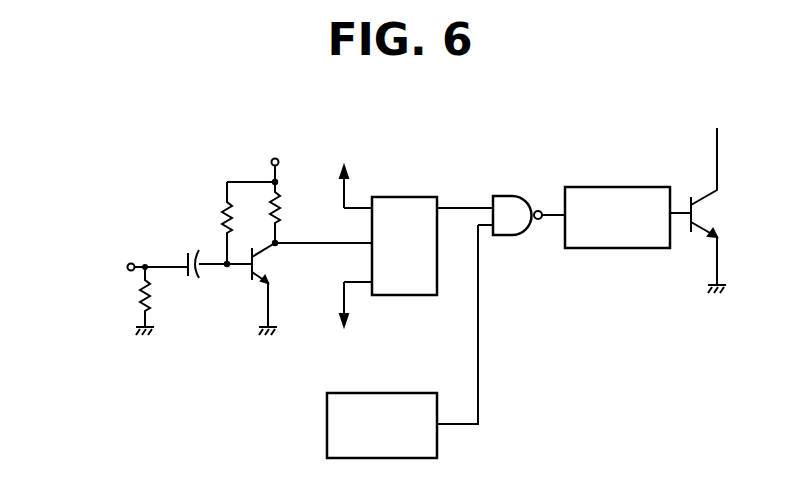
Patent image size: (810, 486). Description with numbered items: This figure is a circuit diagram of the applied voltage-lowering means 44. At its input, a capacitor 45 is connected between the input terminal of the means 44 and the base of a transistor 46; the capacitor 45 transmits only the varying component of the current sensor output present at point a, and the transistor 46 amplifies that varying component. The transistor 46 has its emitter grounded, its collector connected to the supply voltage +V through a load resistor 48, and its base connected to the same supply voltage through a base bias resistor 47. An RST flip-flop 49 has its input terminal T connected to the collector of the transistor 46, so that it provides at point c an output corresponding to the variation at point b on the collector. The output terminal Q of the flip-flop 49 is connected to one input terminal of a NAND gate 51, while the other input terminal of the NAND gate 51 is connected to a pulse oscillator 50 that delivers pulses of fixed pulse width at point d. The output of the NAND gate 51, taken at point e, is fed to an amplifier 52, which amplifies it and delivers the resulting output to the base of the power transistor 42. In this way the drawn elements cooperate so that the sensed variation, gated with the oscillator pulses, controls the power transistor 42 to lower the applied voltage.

The power transistor 42 is at (719, 179).
The applied voltage-lowering means 44 is at (590, 353).
The capacitor 45 is at (193, 279).
The transistor 46 is at (250, 277).
The base bias resistor 47 is at (222, 209).
The load resistor 48 is at (281, 201).
The RST flip-flop 49 is at (408, 197).
The pulse oscillator 50 is at (378, 393).
The NAND gate 51 is at (520, 196).
The amplifier 52 is at (608, 187).